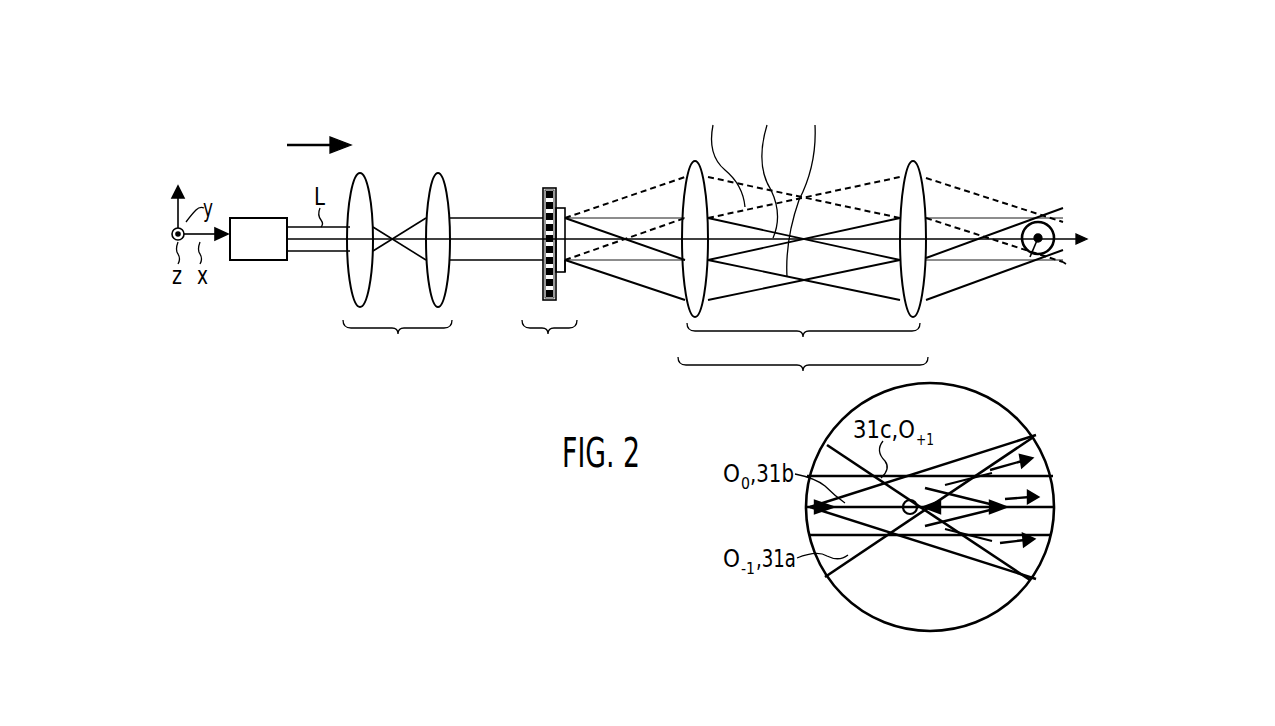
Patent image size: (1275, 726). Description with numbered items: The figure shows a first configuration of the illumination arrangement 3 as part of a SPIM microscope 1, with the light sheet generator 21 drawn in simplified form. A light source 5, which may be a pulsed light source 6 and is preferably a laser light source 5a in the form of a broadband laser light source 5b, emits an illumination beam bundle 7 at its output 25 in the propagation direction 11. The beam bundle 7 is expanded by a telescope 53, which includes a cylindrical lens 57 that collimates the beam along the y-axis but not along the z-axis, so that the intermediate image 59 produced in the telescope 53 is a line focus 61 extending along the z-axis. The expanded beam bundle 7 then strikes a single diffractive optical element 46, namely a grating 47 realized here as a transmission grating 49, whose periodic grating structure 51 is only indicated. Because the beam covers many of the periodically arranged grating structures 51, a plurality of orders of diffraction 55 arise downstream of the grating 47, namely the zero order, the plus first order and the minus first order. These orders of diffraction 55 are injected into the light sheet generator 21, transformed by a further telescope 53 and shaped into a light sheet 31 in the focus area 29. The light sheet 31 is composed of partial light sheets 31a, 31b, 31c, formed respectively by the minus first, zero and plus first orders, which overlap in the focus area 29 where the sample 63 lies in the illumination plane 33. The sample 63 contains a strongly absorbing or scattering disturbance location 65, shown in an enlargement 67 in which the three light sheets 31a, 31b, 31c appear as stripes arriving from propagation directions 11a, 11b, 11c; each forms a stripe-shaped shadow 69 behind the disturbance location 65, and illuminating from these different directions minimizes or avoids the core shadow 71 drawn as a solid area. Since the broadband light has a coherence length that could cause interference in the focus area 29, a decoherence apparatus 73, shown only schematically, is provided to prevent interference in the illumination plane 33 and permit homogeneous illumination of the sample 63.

The SPIM microscope 1 is at (460, 100).
The illumination arrangement 3 is at (546, 240).
The light source 5 is at (265, 239).
The laser light source 5a is at (265, 239).
The broadband laser light source 5b is at (265, 239).
The pulsed light source 6 is at (243, 218).
The illumination beam bundle 7 is at (322, 251).
The propagation direction 11 is at (305, 143).
The propagation direction 11a is at (1020, 443).
The propagation direction 11b is at (1030, 580).
The propagation direction 11c is at (982, 537).
The light sheet generator 21 is at (803, 379).
The output 25 is at (265, 208).
The focus area 29 is at (1028, 200).
The light sheet 31 is at (991, 199).
The partial light sheet 31a is at (991, 199).
The partial light sheet 31b is at (991, 199).
The partial light sheet 31c is at (1003, 233).
The illumination plane 33 is at (1068, 266).
The diffractive optical element 46 is at (546, 207).
The grating 47 is at (546, 207).
The transmission grating 49 is at (548, 188).
The periodic grating structure 51 is at (569, 190).
The telescope 53 is at (634, 240).
The orders of diffraction 55 is at (630, 200).
The cylindrical lens 57 is at (360, 173).
The intermediate image 59 is at (420, 210).
The line focus 61 is at (437, 172).
The sample 63 is at (1056, 222).
The disturbance location 65 is at (1030, 257).
The enlargement 67 is at (808, 507).
The shadow 69 is at (970, 485).
The core shadow 71 is at (925, 500).
The decoherence apparatus 73 is at (566, 272).